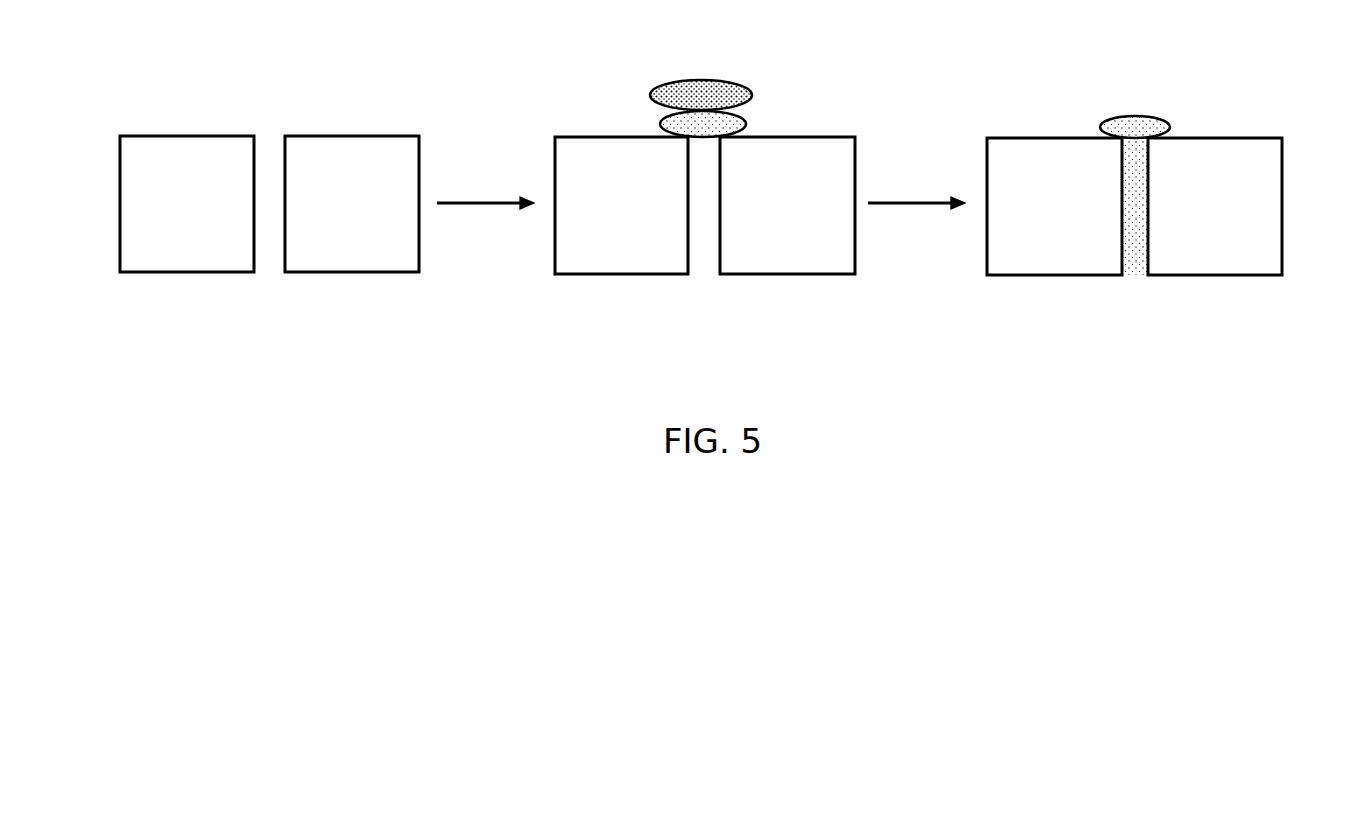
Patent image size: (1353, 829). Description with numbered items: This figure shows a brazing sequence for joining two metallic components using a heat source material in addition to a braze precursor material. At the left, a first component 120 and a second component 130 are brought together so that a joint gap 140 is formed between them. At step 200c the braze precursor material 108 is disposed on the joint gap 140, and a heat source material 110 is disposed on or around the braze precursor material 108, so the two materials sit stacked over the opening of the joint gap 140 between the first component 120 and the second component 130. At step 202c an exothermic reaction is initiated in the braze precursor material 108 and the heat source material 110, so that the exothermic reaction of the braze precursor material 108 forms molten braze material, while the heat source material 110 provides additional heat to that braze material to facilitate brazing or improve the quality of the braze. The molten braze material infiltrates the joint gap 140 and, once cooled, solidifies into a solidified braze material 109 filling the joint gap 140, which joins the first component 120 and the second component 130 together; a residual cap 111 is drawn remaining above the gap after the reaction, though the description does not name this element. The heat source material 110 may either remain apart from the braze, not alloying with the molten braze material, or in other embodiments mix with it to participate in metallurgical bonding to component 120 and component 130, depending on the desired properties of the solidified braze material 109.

The braze precursor material 108 is at (747, 127).
The solidified braze material 109 is at (1143, 197).
The heat source material 110 is at (687, 80).
The residual material head 111 is at (1140, 113).
The first component 120 is at (200, 272).
The second component 130 is at (342, 272).
The joint gap 140 is at (269, 137).
The step of disposing braze precursor material and heat source material 200c is at (468, 203).
The step of initiating exothermic reaction 202c is at (908, 203).